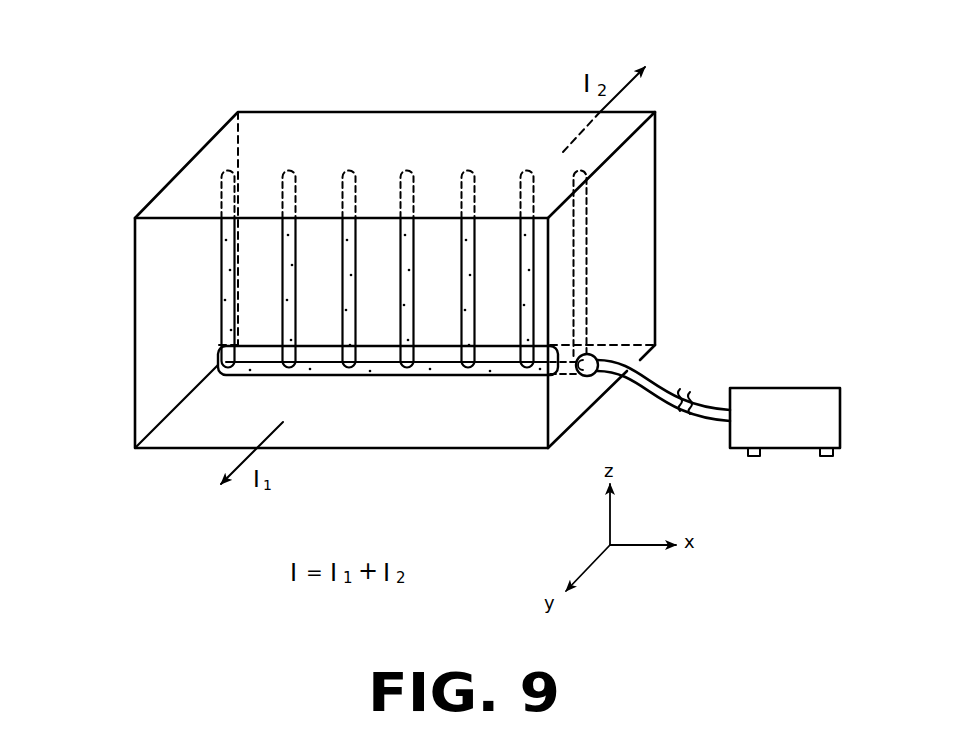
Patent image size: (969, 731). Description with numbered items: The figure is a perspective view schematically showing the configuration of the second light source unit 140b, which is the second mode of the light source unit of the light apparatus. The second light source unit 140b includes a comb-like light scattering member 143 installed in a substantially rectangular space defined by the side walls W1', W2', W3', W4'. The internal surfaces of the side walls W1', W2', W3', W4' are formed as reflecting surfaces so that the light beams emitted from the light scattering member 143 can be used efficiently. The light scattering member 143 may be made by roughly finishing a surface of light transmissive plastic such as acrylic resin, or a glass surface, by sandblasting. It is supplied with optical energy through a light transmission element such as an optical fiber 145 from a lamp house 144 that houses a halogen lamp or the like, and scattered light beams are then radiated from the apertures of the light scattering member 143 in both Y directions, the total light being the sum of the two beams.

The second light source unit 140b is at (445, 58).
The comb-like light scattering member 143 is at (600, 231).
The lamp house 144 is at (787, 406).
The optical fiber 145 is at (640, 392).
The side wall W1' is at (685, 100).
The side wall W2' is at (684, 280).
The side wall W3' is at (403, 467).
The side wall W4' is at (144, 198).